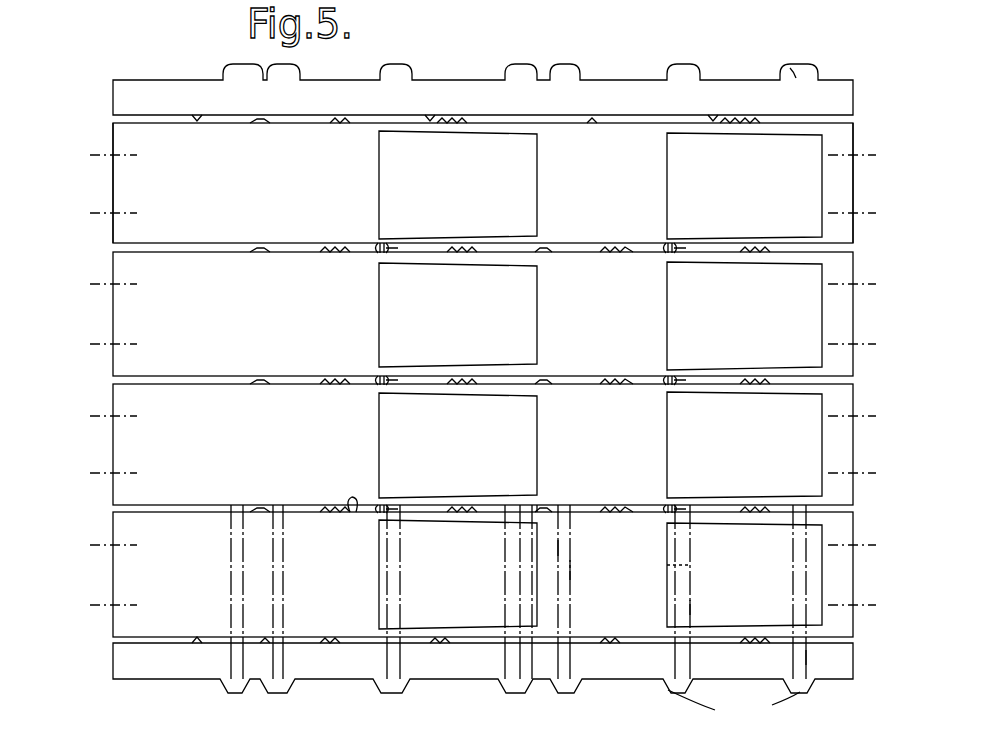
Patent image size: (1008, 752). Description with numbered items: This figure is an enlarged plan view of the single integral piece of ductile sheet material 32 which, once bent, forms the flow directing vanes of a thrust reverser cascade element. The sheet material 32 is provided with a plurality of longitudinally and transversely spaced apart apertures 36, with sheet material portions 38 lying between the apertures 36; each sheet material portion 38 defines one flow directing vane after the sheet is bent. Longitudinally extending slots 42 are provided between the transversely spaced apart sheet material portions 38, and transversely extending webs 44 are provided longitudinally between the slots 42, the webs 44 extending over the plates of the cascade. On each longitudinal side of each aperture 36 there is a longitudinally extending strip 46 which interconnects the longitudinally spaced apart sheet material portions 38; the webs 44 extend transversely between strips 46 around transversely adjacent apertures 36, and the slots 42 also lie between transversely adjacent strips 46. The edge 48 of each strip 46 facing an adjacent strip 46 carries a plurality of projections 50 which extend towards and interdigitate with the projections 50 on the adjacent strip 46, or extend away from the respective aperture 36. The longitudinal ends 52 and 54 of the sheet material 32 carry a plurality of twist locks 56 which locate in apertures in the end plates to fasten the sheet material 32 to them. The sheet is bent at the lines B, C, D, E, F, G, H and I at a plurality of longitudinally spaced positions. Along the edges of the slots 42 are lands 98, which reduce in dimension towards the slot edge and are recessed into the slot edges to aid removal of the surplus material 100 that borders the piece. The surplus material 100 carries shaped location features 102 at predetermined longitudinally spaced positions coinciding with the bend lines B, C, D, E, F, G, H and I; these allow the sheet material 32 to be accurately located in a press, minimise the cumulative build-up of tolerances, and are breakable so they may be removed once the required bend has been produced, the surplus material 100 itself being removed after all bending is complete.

The ductile sheet material 32 is at (845, 140).
The apertures 36 is at (442, 199).
The sheet material portions 38 is at (300, 199).
The slots 42 is at (503, 378).
The webs 44 is at (392, 369).
The strips 46 is at (497, 244).
The edge 48 is at (300, 513).
The projections 50 is at (262, 513).
The longitudinal end 52 is at (855, 187).
The longitudinal end 54 is at (113, 138).
The twist lock 56 is at (113, 213).
The lands 98 is at (196, 117).
The surplus material 100 is at (830, 92).
The location features 102 is at (794, 64).
The bend line I is at (535, 510).
The bend line H is at (560, 548).
The bend line G is at (571, 575).
The bend line F is at (676, 545).
The bend line E is at (684, 577).
The bend line D is at (690, 610).
The bend line C is at (793, 621).
The bend line B is at (806, 662).